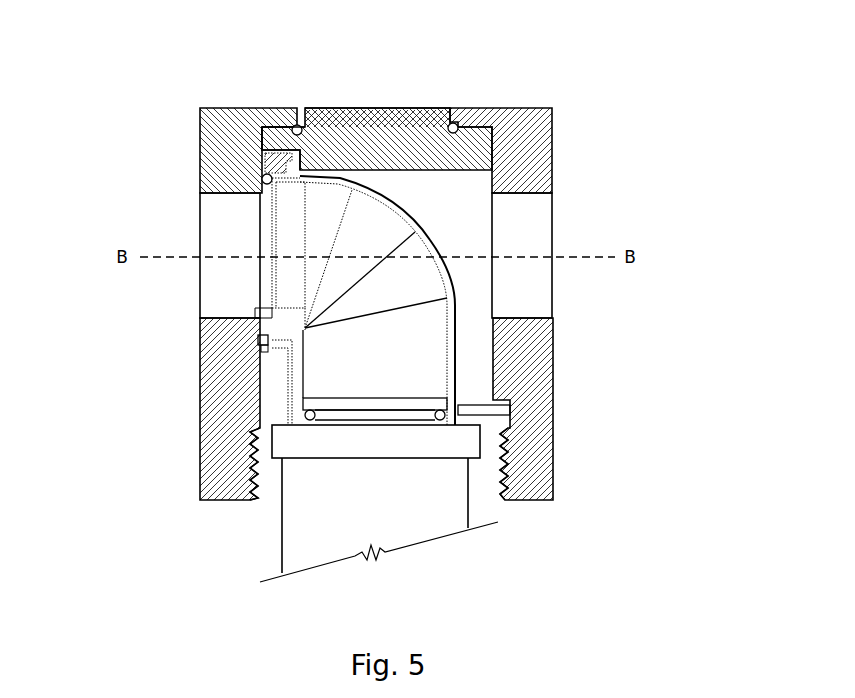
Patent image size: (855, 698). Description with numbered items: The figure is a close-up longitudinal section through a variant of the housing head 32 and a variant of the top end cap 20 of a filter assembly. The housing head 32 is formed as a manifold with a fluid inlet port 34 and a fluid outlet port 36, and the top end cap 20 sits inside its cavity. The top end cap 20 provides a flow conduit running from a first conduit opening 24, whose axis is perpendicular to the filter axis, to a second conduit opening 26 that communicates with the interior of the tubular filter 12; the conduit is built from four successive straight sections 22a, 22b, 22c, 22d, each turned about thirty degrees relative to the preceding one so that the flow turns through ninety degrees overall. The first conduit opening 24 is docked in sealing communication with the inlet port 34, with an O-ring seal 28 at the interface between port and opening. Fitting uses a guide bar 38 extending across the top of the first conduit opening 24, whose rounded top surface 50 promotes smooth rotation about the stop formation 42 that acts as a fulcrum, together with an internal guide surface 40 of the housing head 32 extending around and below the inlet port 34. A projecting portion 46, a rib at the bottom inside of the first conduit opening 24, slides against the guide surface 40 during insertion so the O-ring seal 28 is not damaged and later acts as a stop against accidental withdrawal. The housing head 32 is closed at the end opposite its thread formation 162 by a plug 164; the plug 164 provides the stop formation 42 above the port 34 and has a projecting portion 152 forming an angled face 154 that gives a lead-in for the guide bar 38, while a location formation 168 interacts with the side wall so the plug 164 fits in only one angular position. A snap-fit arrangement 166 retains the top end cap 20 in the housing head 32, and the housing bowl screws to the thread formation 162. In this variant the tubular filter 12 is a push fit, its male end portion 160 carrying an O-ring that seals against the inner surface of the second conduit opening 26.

The tubular filter 12 is at (276, 552).
The top end cap 20 is at (440, 237).
The first straight section of flow conduit 22a is at (314, 255).
The second straight section of flow conduit 22b is at (360, 279).
The third straight section of flow conduit 22c is at (376, 303).
The fourth straight section of flow conduit 22d is at (358, 364).
The first conduit opening 24 is at (262, 212).
The second conduit opening 26 is at (383, 388).
The O-ring seal 28 is at (258, 340).
The housing head 32 is at (478, 104).
The fluid inlet port 34 is at (213, 243).
The fluid outlet port 36 is at (525, 232).
The guide bar 38 is at (262, 158).
The internal guide surface 40 is at (248, 392).
The stop formation 42 is at (290, 124).
The projecting portion 46 is at (258, 310).
The top surface of guide bar 50 is at (216, 108).
The projecting portion of plug 152 is at (362, 125).
The angled face 154 is at (291, 125).
The male end portion 160 is at (372, 412).
The thread formation 162 is at (246, 468).
The plug 164 is at (400, 125).
The snap-fit arrangement 166 is at (515, 410).
The location formation 168 is at (482, 165).